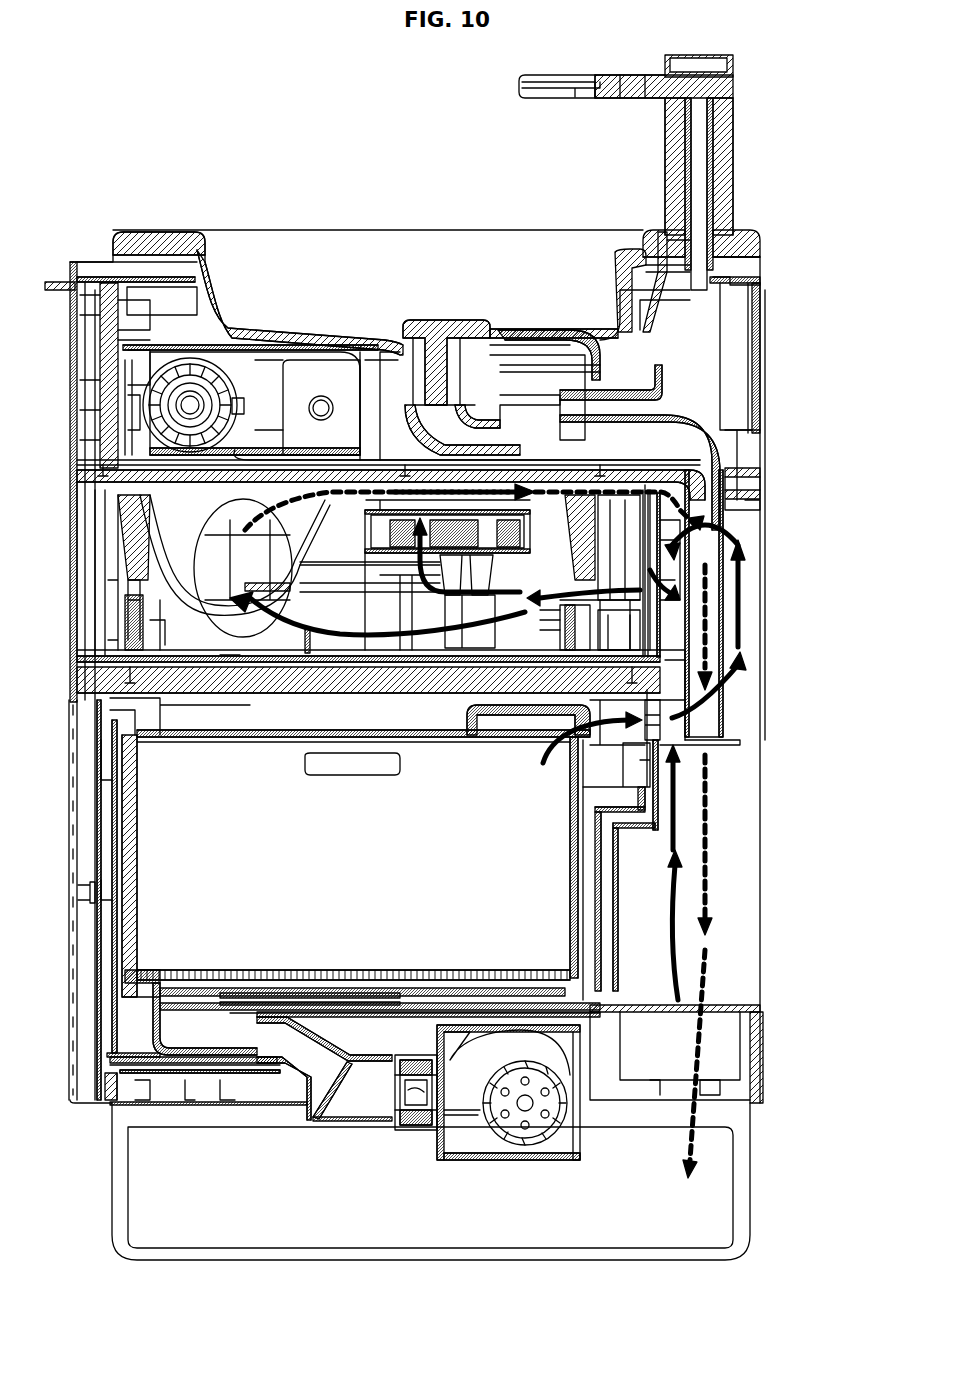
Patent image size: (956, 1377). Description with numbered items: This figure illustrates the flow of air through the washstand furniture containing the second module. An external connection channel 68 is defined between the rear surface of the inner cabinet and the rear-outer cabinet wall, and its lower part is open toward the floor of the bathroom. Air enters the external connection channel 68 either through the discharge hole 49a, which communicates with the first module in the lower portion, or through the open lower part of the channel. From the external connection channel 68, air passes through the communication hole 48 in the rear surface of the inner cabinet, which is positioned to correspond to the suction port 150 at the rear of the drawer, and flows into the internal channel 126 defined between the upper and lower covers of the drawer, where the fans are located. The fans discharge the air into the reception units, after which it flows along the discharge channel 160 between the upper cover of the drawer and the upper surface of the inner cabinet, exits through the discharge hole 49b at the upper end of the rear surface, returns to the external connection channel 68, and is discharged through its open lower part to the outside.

The discharge channel 160 is at (530, 415).
The discharge hole 49b is at (737, 492).
The communication hole 48 is at (660, 568).
The suction port 150 is at (638, 605).
The internal channel 126 is at (540, 637).
The discharge hole 49a is at (658, 732).
The external connection channel 68 is at (733, 838).